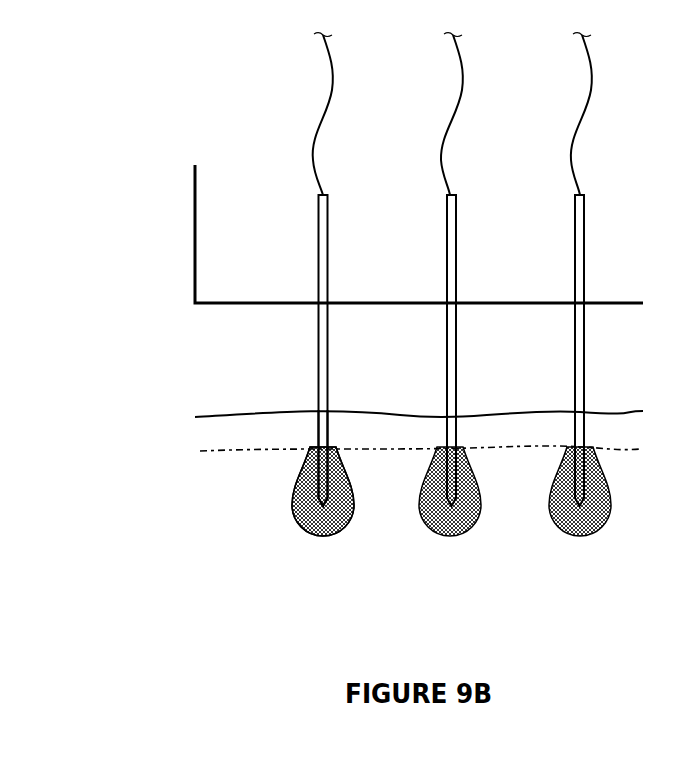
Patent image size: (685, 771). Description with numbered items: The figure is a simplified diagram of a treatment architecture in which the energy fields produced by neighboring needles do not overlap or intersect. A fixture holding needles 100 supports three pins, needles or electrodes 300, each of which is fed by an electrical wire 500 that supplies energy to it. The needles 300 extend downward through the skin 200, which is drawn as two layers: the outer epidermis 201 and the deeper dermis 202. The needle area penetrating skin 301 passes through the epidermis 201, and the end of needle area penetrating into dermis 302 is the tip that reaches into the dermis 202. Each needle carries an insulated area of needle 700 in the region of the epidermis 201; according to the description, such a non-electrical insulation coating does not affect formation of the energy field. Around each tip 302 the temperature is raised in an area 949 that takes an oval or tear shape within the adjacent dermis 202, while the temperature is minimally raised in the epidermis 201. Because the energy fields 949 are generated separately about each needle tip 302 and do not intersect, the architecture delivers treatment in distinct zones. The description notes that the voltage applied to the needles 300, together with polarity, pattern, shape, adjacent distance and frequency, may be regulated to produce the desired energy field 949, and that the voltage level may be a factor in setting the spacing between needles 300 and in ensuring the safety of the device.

The fixture holding needles 100 is at (195, 236).
The skin 200 is at (357, 446).
The epidermis 201 is at (210, 435).
The dermis 202 is at (211, 470).
The pin/needle/electrode 300 is at (318, 338).
The needle area penetrating skin 301 is at (313, 440).
The end of needle area penetrating into dermis 302 is at (305, 524).
The electrical wire 500 is at (583, 113).
The insulated area of needle 700 is at (588, 426).
The area where the temperature is raised using partially insulated needles in epider 949 is at (350, 530).